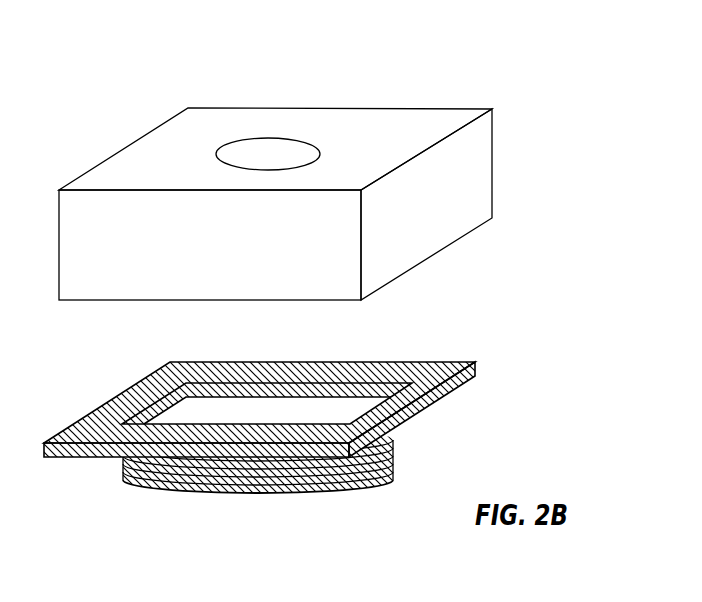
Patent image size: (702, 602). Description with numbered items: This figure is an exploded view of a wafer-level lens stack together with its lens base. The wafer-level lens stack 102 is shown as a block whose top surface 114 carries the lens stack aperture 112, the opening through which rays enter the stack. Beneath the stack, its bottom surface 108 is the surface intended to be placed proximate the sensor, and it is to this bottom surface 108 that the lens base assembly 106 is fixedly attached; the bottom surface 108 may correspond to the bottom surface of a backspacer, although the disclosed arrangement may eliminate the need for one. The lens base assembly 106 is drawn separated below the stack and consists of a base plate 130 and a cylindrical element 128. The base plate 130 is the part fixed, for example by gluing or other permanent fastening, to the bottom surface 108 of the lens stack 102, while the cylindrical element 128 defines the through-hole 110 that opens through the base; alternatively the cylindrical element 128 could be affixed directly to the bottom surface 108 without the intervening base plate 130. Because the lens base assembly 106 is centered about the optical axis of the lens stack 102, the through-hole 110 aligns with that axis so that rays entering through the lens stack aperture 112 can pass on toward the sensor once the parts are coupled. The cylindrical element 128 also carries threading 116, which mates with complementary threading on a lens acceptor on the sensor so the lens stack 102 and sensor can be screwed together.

The wafer-level lens stack 102 is at (304, 153).
The lens base assembly 106 is at (305, 451).
The bottom surface 108 is at (462, 244).
The through-hole 110 is at (303, 406).
The lens stack aperture 112 is at (271, 138).
The top surface 114 is at (421, 130).
The threading 116 is at (122, 480).
The cylindrical element 128 is at (228, 502).
The base plate 130 is at (254, 387).